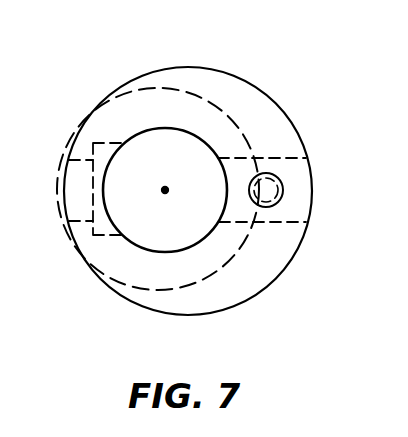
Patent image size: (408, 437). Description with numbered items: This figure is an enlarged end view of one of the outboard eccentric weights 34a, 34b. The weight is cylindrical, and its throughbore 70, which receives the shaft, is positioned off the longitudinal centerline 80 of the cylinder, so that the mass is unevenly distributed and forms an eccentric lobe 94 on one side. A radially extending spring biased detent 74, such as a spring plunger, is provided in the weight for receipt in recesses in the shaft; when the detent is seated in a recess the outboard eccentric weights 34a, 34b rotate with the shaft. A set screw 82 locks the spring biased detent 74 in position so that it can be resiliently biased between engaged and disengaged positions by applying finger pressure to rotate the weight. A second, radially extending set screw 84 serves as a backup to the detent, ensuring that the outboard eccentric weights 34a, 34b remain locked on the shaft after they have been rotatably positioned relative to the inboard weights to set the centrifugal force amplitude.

The outboard eccentric weight 34a is at (216, 179).
The outboard eccentric weight 34b is at (243, 75).
The eccentric lobe 94 is at (262, 273).
The throughbore 70 is at (165, 190).
The longitudinal centerline 80 is at (165, 193).
The set screw 84 is at (78, 170).
The spring biased detent 74 is at (254, 170).
The set screw 82 is at (279, 202).